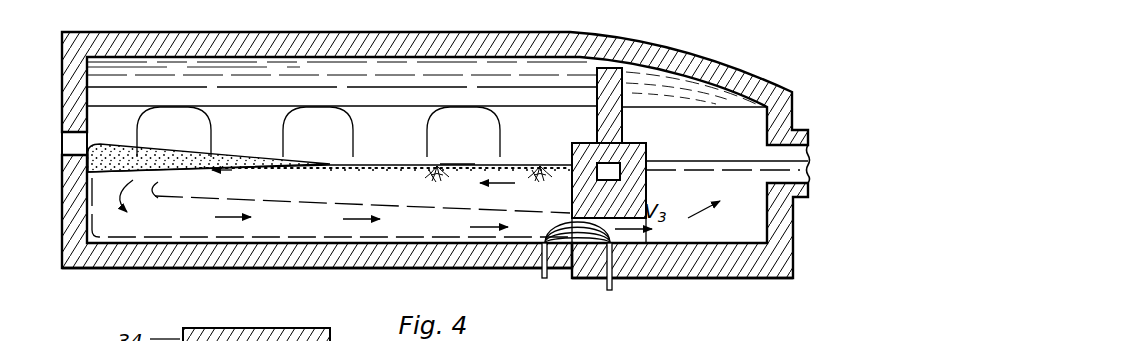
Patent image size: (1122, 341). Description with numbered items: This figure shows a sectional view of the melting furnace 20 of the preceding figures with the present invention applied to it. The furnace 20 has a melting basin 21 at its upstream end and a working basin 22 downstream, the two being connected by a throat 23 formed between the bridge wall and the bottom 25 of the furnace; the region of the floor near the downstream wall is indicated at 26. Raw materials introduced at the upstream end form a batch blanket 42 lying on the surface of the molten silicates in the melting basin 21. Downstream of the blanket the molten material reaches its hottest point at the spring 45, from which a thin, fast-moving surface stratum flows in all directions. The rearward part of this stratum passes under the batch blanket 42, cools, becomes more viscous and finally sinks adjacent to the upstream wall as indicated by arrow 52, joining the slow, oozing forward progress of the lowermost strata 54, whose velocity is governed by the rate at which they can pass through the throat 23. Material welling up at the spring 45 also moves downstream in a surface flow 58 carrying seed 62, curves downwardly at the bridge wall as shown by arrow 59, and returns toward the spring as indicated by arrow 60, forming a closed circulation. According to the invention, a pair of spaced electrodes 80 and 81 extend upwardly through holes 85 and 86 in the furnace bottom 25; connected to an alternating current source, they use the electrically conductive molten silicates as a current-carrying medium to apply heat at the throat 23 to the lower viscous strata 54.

The furnace 20 is at (502, 30).
The melting basin 21 is at (285, 245).
The working basin 22 is at (693, 246).
The throat 23 is at (579, 250).
The bottom 25 is at (440, 252).
The floor extension 26 is at (658, 279).
The batch blanket 42 is at (137, 158).
The spring 45 is at (441, 163).
The sinking flow arrow 52 is at (130, 197).
The lowermost strata 54 is at (365, 216).
The downstream surface flow 58 is at (384, 158).
The downward curving flow arrow 59 is at (554, 164).
The return flow arrow 60 is at (500, 188).
The seed 62 is at (457, 163).
The electrode 80 is at (537, 272).
The electrode 81 is at (616, 284).
The hole 85 is at (538, 248).
The hole 86 is at (603, 257).